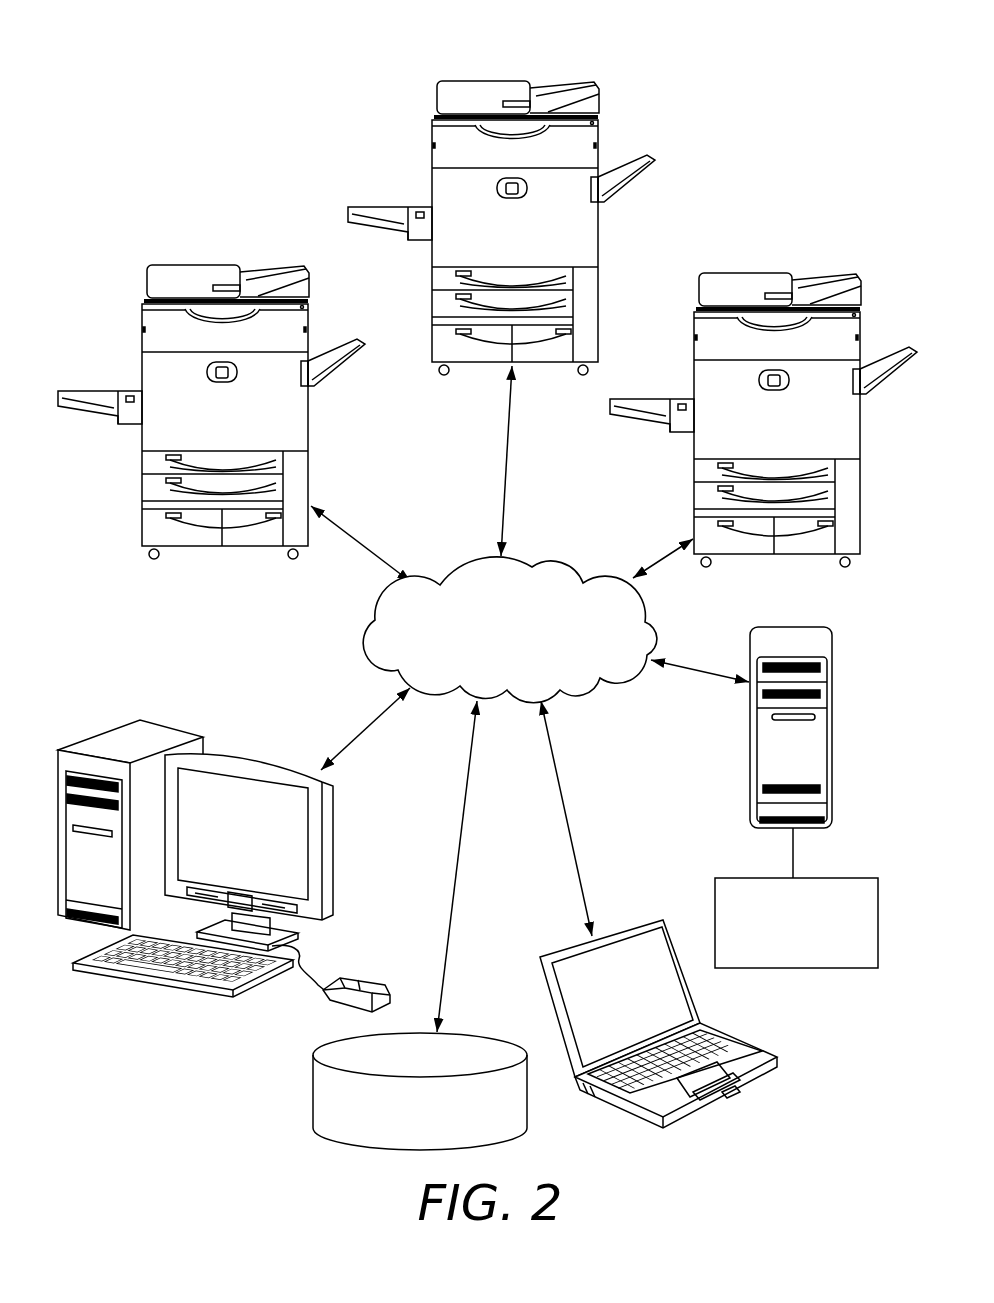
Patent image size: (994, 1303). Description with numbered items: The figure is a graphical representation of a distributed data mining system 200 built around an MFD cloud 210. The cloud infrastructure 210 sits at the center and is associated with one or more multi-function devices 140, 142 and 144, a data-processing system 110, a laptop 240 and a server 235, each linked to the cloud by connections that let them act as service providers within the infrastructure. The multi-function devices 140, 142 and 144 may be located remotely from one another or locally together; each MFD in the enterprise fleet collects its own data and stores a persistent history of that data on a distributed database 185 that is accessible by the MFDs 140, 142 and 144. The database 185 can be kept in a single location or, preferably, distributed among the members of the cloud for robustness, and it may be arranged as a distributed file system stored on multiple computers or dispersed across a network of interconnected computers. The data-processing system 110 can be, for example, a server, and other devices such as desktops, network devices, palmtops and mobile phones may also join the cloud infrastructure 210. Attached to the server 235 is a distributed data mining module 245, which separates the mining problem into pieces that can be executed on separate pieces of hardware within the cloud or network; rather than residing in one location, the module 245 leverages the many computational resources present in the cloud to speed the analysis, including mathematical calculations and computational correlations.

The distributed data mining system 200 is at (652, 83).
The multi-function device 140 is at (482, 80).
The multi-function device 142 is at (192, 262).
The multi-function device 144 is at (787, 268).
The MFD cloud 210 is at (545, 562).
The server 235 is at (833, 700).
The distributed data mining module 245 is at (828, 968).
The data-processing system 110 is at (333, 840).
The laptop 240 is at (616, 933).
The distributed database 185 is at (463, 1035).